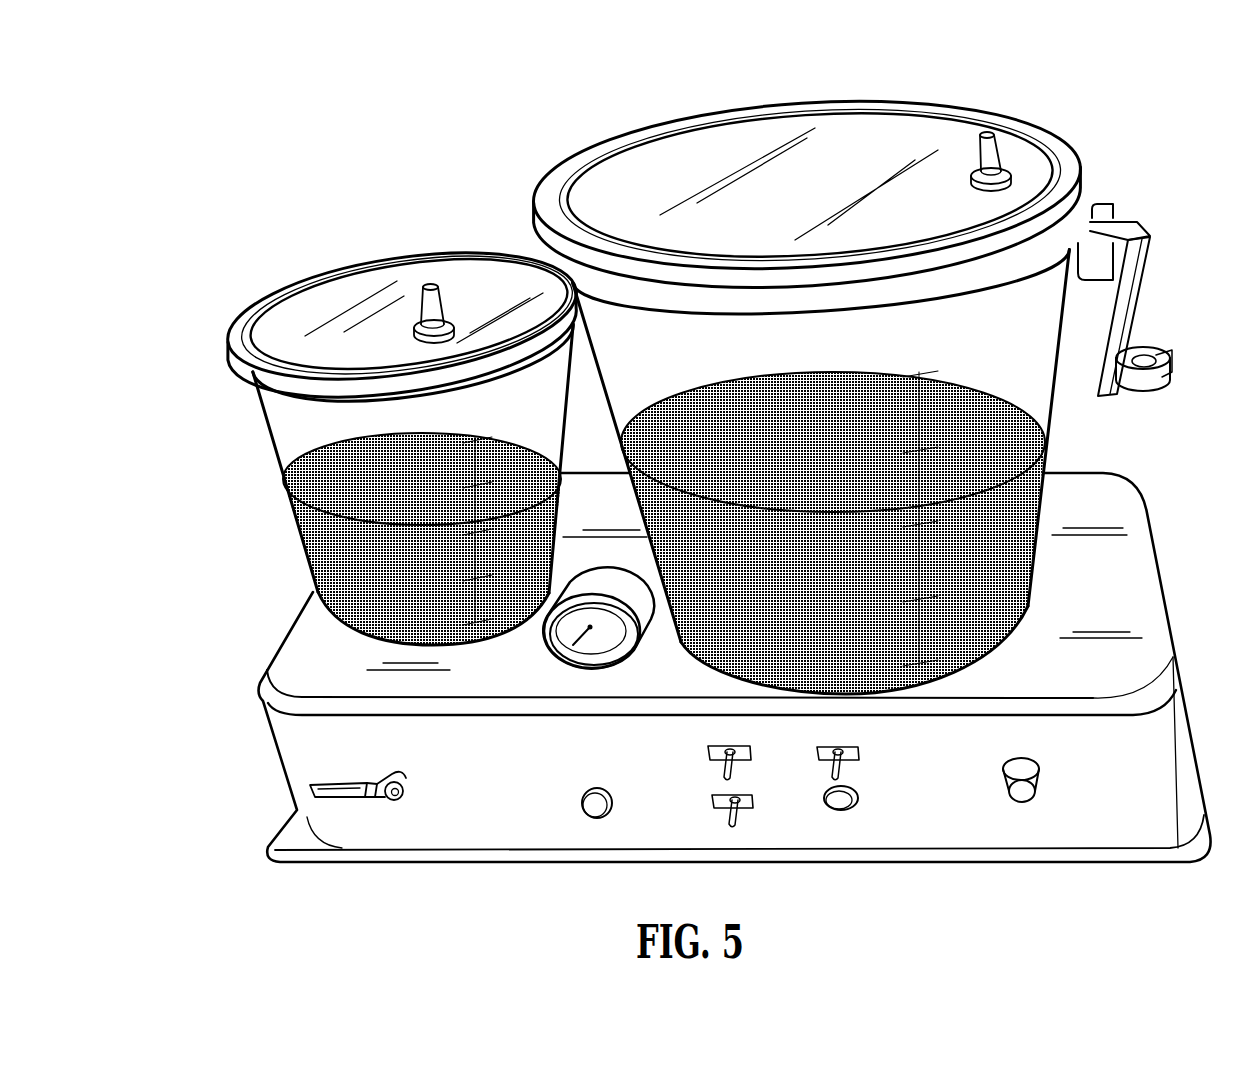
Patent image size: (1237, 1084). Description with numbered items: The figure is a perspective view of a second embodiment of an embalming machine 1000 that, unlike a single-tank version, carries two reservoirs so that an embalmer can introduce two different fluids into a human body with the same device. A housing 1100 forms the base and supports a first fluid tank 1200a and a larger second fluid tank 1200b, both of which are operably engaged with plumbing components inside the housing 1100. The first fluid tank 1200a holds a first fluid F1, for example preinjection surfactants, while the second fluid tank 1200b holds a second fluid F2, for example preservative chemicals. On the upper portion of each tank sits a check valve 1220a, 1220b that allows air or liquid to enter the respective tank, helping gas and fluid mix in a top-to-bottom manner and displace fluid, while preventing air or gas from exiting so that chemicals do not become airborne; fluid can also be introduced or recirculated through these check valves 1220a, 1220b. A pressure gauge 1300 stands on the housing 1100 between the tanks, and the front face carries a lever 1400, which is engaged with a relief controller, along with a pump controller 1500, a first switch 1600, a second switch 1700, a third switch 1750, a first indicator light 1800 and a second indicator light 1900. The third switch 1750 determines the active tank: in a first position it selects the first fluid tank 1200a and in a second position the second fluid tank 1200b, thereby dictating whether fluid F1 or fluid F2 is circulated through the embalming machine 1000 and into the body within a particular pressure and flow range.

The embalming machine 1000 is at (699, 475).
The housing 1100 is at (298, 655).
The first fluid tank 1200a is at (386, 410).
The second fluid tank 1200b is at (879, 93).
The check valve 1220a is at (432, 297).
The check valve 1220b is at (993, 142).
The pressure gauge 1300 is at (603, 645).
The lever 1400 is at (328, 778).
The pump controller 1500 is at (1040, 793).
The first switch 1600 is at (733, 817).
The second switch 1700 is at (733, 772).
The third switch 1750 is at (843, 768).
The first indicator light 1800 is at (592, 807).
The second indicator light 1900 is at (837, 807).
The first fluid F1 is at (313, 536).
The second fluid F2 is at (1018, 494).